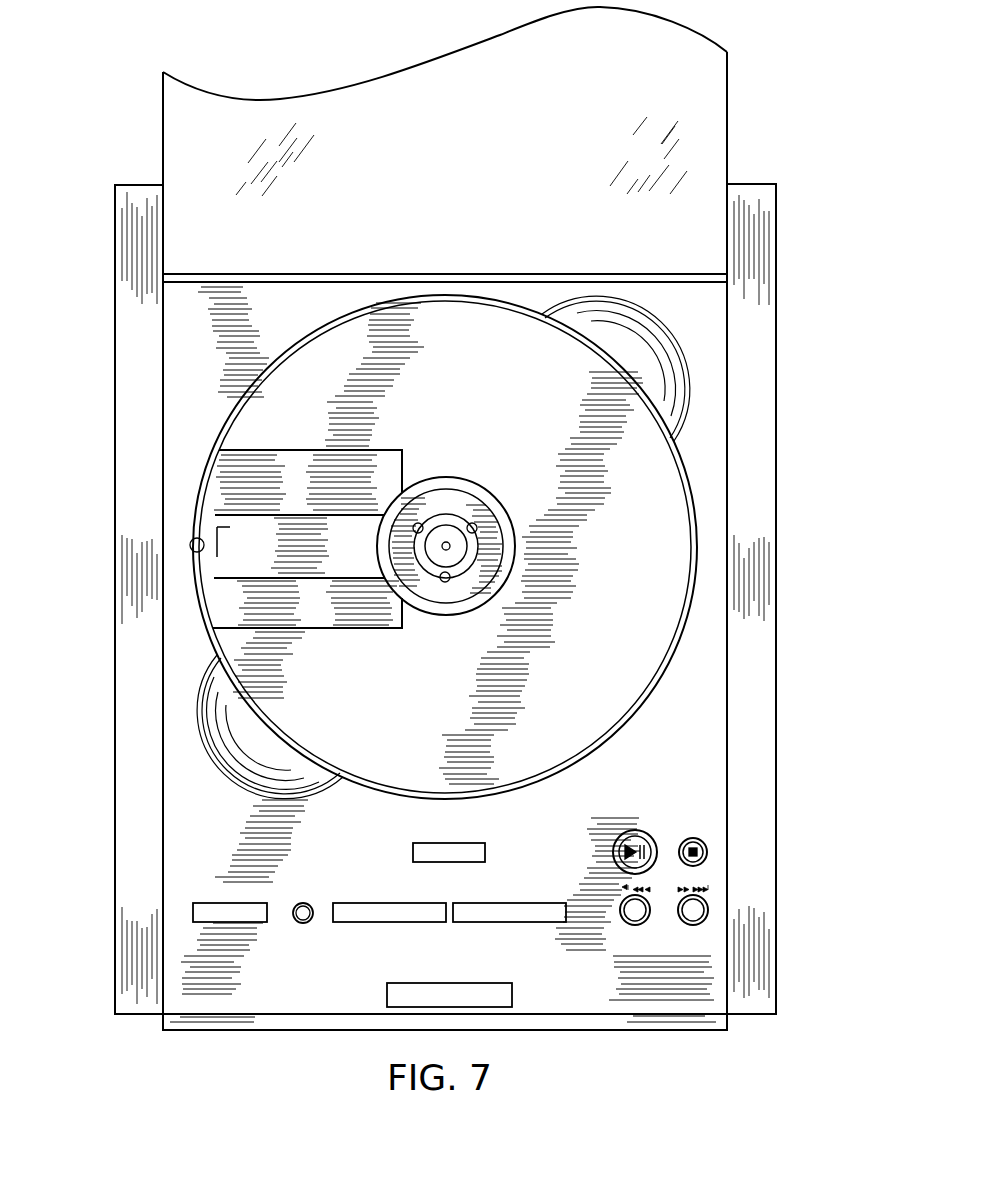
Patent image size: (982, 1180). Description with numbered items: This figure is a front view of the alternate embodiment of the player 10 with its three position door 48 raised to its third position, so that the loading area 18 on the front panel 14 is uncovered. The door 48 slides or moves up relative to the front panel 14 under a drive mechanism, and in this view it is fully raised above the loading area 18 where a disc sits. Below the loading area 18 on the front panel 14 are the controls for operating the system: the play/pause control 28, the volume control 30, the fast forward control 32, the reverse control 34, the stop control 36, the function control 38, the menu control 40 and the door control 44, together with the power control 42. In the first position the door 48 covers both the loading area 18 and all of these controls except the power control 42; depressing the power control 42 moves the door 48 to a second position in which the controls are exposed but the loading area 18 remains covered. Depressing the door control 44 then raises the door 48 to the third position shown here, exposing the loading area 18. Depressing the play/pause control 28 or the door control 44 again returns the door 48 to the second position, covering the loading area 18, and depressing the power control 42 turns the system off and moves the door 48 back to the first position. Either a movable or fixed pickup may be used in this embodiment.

The player 10 is at (766, 137).
The front panel 14 is at (770, 312).
The loading area 18 is at (447, 363).
The three position door 48 is at (247, 115).
The play/pause control 28 is at (633, 836).
The stop control 36 is at (692, 837).
The reverse control 34 is at (635, 921).
The fast forward control 32 is at (693, 921).
The door control 44 is at (423, 848).
The function control 38 is at (203, 912).
The menu control 40 is at (301, 923).
The volume control 30 is at (478, 922).
The power control 42 is at (398, 995).